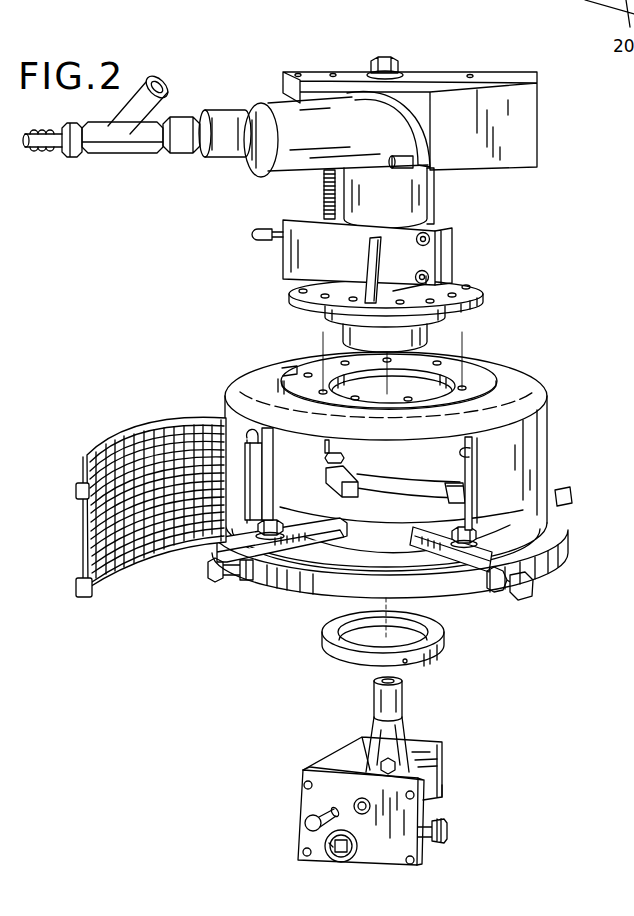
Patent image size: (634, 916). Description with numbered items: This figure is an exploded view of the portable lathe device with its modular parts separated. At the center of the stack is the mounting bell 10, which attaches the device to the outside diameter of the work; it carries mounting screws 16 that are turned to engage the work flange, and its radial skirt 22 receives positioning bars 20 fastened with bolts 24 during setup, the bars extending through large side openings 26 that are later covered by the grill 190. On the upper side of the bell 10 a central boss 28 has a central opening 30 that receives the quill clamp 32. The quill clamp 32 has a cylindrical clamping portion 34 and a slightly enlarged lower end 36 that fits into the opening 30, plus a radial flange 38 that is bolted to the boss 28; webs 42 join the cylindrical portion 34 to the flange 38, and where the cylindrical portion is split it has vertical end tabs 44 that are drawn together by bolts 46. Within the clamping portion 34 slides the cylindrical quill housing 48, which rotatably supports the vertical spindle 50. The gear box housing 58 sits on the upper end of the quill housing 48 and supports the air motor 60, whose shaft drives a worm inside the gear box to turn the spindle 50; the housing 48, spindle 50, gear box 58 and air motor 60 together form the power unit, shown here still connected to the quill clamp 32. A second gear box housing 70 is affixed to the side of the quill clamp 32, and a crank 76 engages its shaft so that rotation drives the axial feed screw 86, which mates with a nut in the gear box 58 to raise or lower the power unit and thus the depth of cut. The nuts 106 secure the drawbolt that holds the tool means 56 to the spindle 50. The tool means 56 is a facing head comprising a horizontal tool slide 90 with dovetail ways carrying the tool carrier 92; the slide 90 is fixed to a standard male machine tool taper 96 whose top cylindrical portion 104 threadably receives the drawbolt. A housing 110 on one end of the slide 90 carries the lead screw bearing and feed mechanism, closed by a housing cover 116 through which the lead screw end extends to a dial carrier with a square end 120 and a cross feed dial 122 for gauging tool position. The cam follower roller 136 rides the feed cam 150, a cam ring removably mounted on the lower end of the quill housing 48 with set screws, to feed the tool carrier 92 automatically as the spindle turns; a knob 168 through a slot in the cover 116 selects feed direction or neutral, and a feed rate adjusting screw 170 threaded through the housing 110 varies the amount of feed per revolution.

The mounting bell 10 is at (539, 428).
The mounting screws 16 is at (571, 494).
The positioning bars 20 is at (420, 515).
The radial skirt 22 is at (569, 545).
The bolts 24 is at (272, 520).
The side openings 26 is at (326, 449).
The central boss 28 is at (293, 382).
The central opening 30 is at (492, 372).
The quill clamp 32 is at (346, 261).
The cylindrical clamping portion 34 is at (413, 274).
The enlarged lower end 36 is at (447, 319).
The radial flange 38 is at (478, 289).
The webs 42 is at (373, 262).
The vertical end tabs 44 is at (451, 252).
The bolts 46 is at (418, 239).
The quill housing 48 is at (435, 187).
The spindle 50 is at (430, 341).
The tool means 56 is at (392, 771).
The gear box housing 58 is at (455, 72).
The air motor 60 is at (270, 104).
The second gear box housing 70 is at (330, 262).
The crank 76 is at (249, 236).
The axial feed screw 86 is at (323, 197).
The tool slide 90 is at (433, 749).
The tool carrier 92 is at (444, 795).
The machine tool taper 96 is at (377, 738).
The top cylindrical portion 104 is at (373, 696).
The nuts 106 is at (395, 71).
The housing 110 is at (302, 772).
The housing cover 116 is at (392, 852).
The square end 120 is at (330, 862).
The cross feed dial 122 is at (327, 843).
The cam follower roller 136 is at (392, 762).
The feed cam 150 is at (322, 639).
The knob 168 is at (311, 818).
The feed rate adjusting screw 170 is at (449, 832).
The grill 190 is at (110, 441).